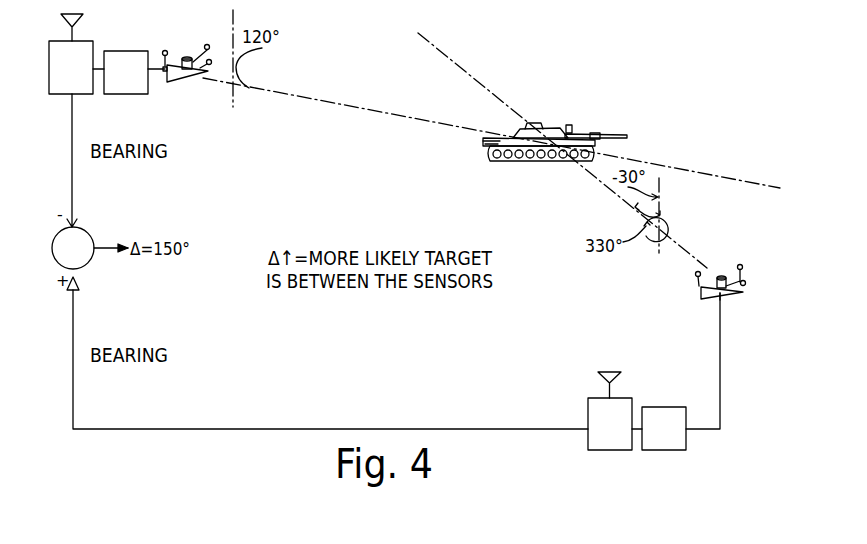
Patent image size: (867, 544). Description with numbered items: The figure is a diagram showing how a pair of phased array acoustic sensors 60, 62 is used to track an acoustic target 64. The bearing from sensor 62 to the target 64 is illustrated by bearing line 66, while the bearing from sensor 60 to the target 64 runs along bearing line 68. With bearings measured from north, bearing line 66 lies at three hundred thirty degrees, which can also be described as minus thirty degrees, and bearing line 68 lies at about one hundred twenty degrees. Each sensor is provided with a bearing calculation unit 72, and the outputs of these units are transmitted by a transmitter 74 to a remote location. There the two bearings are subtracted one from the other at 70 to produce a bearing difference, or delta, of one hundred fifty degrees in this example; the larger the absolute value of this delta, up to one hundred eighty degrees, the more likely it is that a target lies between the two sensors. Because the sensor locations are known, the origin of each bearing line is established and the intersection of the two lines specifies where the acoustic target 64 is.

The phased array acoustic sensor 60 is at (178, 77).
The phased array acoustic sensor 62 is at (735, 283).
The target 64 is at (552, 125).
The bearing line 66 is at (462, 66).
The bearing line 68 is at (308, 97).
The difference calculation 70 is at (60, 265).
The bearing calculation unit 72 is at (140, 51).
The transmitter 74 is at (93, 45).